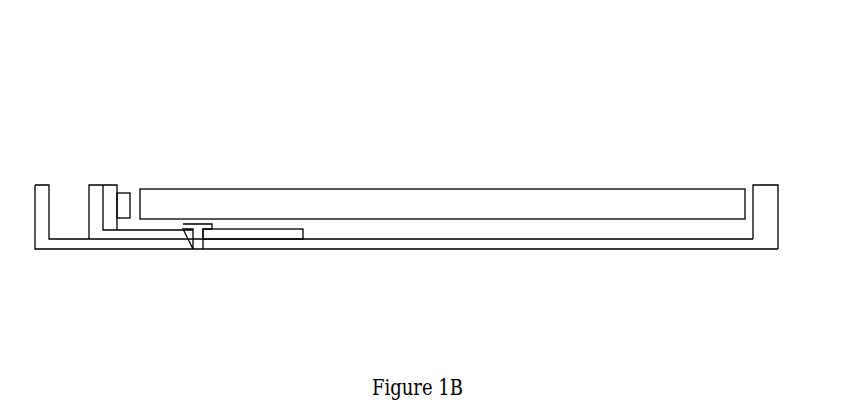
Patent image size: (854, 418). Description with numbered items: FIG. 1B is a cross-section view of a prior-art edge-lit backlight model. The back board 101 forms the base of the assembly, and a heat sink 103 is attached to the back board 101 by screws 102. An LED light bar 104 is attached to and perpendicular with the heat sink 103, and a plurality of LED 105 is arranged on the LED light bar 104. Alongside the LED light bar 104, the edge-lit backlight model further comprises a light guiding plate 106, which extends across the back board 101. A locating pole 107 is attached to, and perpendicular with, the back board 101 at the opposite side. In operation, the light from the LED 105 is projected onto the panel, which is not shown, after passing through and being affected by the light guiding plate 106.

The back board 101 is at (503, 242).
The screws 102 is at (197, 238).
The heat sink 103 is at (268, 232).
The LED light bar 104 is at (110, 193).
The LED 105 is at (125, 198).
The light guiding plate 106 is at (497, 200).
The locating pole 107 is at (765, 198).